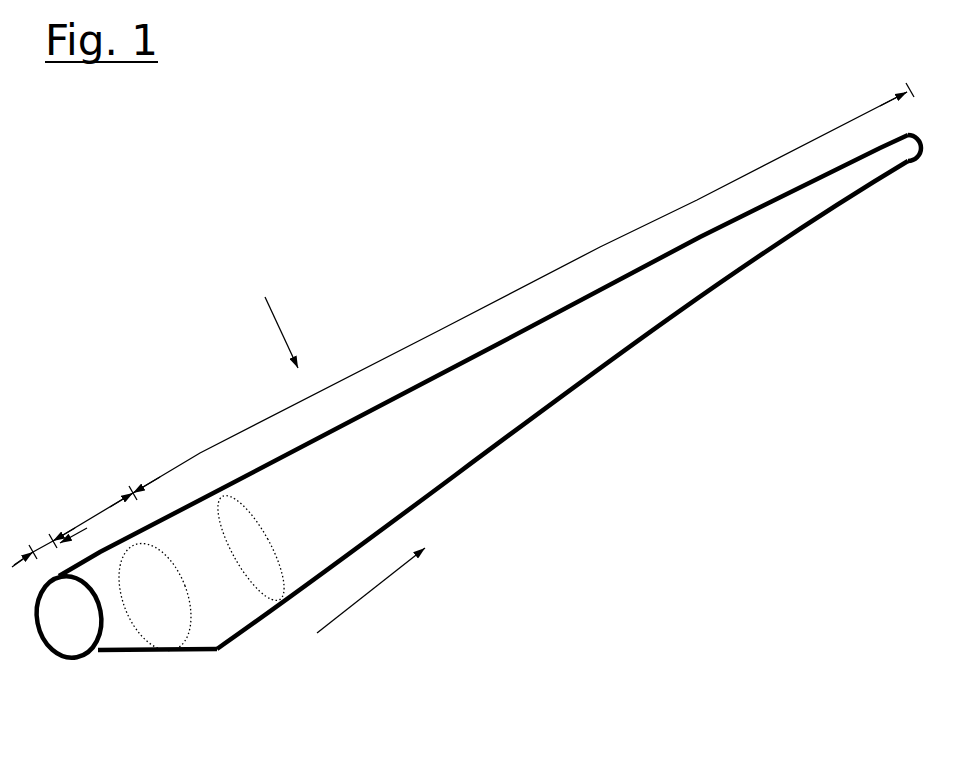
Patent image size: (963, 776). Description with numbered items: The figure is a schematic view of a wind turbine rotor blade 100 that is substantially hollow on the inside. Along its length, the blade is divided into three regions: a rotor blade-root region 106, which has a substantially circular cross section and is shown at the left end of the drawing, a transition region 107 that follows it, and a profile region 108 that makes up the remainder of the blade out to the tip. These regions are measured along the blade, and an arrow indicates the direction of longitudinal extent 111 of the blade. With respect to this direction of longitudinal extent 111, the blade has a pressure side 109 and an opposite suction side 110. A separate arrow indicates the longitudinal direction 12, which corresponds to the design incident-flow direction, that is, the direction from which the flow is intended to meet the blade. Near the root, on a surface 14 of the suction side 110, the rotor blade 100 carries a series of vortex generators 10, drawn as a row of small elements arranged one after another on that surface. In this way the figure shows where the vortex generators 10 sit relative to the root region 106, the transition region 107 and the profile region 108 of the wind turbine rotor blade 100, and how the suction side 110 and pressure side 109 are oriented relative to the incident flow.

The wind turbine rotor blade 100 is at (475, 395).
The vortex generators 10 is at (197, 530).
The longitudinal direction 12 is at (287, 329).
The surface 14 is at (490, 392).
The rotor blade-root region 106 is at (38, 557).
The transition region 107 is at (93, 505).
The profile region 108 is at (495, 300).
The pressure side 109 is at (480, 482).
The suction side 110 is at (635, 303).
The direction of longitudinal extent 111 is at (371, 590).